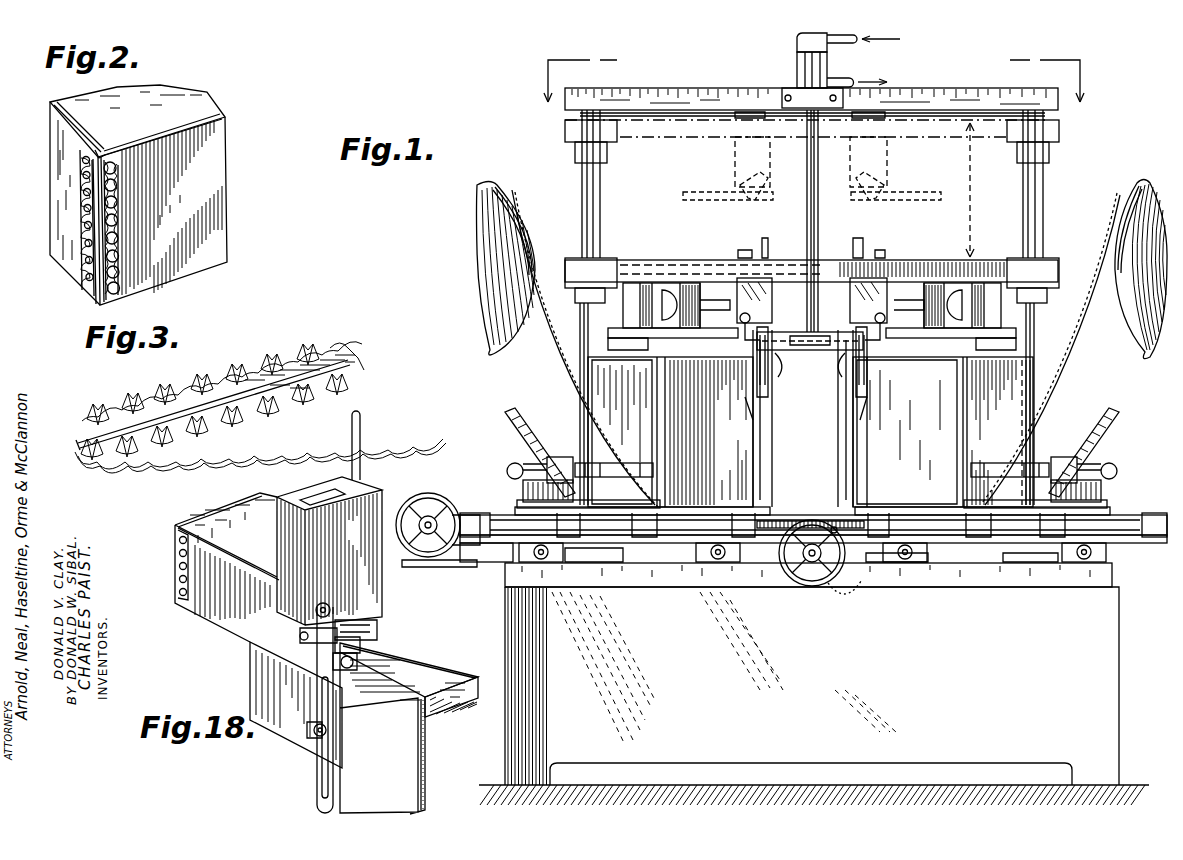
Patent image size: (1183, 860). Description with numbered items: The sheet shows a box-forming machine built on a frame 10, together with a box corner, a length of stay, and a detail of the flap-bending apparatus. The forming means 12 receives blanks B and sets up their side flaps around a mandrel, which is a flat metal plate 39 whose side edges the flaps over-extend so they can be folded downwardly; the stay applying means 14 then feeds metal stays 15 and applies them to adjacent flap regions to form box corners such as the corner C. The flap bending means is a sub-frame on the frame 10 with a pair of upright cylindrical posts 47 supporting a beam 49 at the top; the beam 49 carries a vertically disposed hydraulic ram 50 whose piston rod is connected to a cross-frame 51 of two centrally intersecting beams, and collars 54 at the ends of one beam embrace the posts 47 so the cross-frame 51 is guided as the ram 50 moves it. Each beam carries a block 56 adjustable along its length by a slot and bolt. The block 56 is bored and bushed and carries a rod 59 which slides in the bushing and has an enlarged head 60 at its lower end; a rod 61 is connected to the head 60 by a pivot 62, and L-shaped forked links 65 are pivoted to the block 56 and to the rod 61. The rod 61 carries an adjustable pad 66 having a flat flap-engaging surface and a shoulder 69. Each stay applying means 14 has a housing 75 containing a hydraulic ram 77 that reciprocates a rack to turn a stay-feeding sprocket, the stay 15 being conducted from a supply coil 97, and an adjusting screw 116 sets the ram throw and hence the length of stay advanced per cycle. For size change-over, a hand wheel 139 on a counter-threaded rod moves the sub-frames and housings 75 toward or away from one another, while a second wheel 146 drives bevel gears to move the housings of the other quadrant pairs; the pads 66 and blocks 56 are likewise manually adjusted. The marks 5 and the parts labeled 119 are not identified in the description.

In FIG. 1, the frame 10 is at (815, 677).
In FIG. 1, the forming means 12 is at (1052, 172).
In FIG. 1, the stay applying means 14 is at (850, 452).
In FIG. 2, the metal stay 15 is at (80, 262).
In FIG. 3, the metal stay 15 is at (78, 428).
In FIG. 1, the metal stay 15 is at (553, 363).
In FIG. 18, the flat metal plate 39 is at (460, 706).
In FIG. 1, the cylindrical posts 47 is at (582, 195).
In FIG. 1, the beam 49 is at (927, 92).
In FIG. 1, the hydraulic ram 50 is at (797, 57).
In FIG. 1, the cross-frame 51 is at (669, 256).
In FIG. 1, the collars 54 is at (567, 265).
In FIG. 18, the block 56 is at (278, 532).
In FIG. 1, the block 56 is at (735, 153).
In FIG. 18, the rod 59 is at (360, 428).
In FIG. 18, the enlarged head 60 is at (377, 625).
In FIG. 18, the rod 61 is at (317, 758).
In FIG. 1, the rod 61 is at (688, 200).
In FIG. 18, the pivot 62 is at (360, 645).
In FIG. 18, the forked links 65 is at (337, 612).
In FIG. 18, the pad 66 is at (267, 677).
In FIG. 18, the shoulder 69 is at (427, 797).
In FIG. 1, the housing 75 is at (721, 440).
In FIG. 1, the hydraulic ram 77 is at (633, 463).
In FIG. 1, the supply coil 97 is at (477, 330).
In FIG. 1, the adjusting screw 116 is at (507, 467).
In FIG. 1, the post 119 is at (708, 287).
In FIG. 1, the control wheel 139 is at (810, 587).
In FIG. 18, the manually operable wheel 146 is at (427, 497).
In FIG. 1, the section line 5 is at (812, 96).
In FIG. 2, the blank B is at (213, 102).
In FIG. 18, the blank B is at (437, 627).
In FIG. 1, the blank B is at (812, 350).
In FIG. 2, the box corner C is at (98, 150).